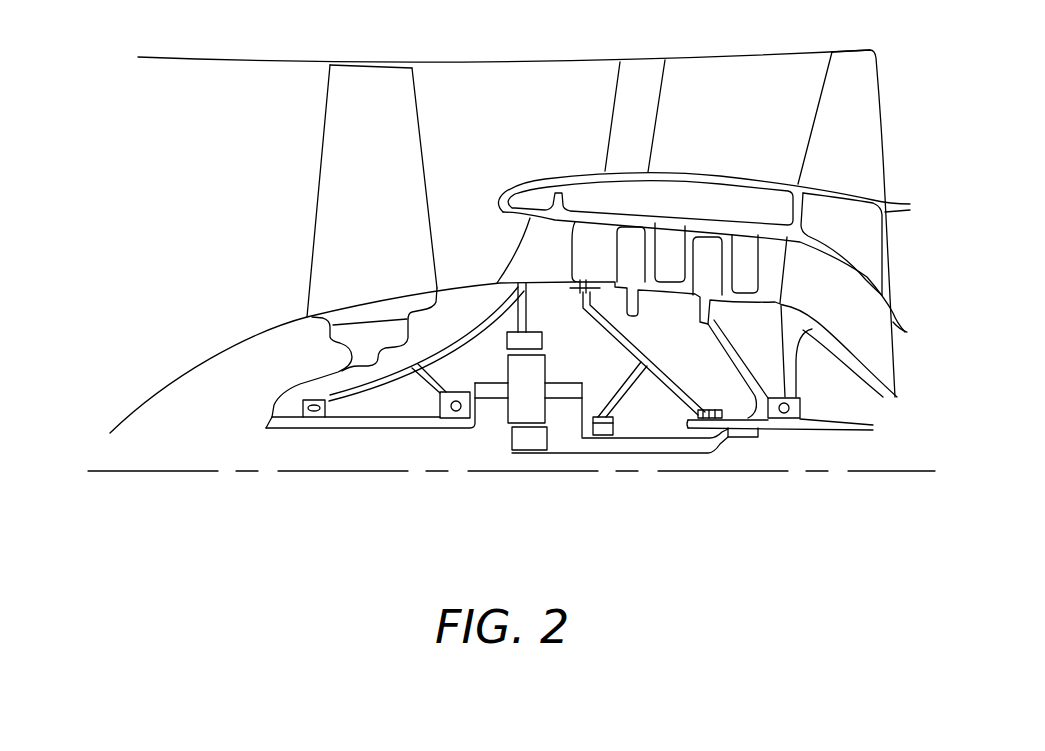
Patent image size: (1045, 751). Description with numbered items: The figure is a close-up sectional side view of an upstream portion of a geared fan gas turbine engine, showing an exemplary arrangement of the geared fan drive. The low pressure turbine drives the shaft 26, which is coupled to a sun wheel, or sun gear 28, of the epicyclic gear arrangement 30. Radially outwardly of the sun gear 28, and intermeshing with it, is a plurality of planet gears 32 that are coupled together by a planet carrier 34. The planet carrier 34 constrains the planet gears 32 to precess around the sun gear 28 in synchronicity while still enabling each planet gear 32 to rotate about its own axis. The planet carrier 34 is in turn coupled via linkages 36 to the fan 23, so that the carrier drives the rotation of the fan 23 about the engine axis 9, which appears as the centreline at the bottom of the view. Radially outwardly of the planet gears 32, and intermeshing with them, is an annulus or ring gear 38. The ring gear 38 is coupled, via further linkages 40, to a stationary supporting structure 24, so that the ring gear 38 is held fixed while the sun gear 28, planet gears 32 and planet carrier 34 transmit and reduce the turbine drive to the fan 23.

The engine axis 9 is at (200, 472).
The fan 23 is at (345, 190).
The stationary supporting structure 24 is at (529, 236).
The shaft 26 is at (653, 453).
The sun gear 28 is at (528, 440).
The epicyclic gear arrangement 30 is at (500, 422).
The planet gears 32 is at (517, 412).
The planet carrier 34 is at (580, 412).
The linkages 36 is at (483, 413).
The ring gear 38 is at (533, 342).
The linkages 40 is at (530, 312).